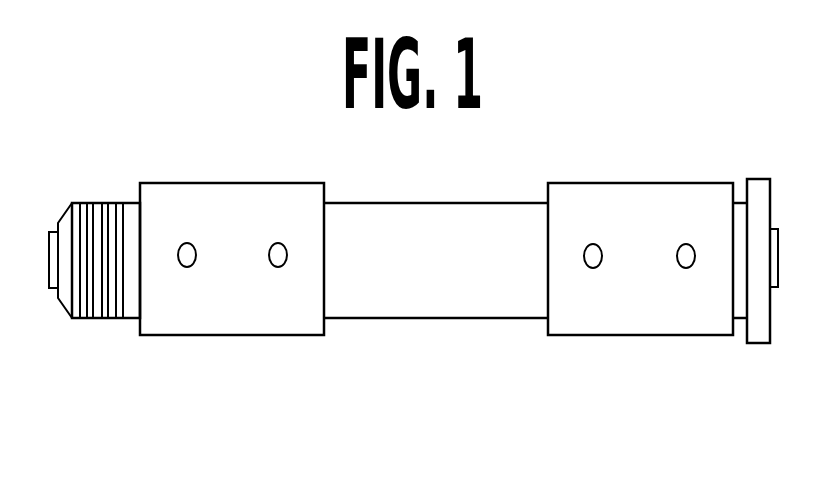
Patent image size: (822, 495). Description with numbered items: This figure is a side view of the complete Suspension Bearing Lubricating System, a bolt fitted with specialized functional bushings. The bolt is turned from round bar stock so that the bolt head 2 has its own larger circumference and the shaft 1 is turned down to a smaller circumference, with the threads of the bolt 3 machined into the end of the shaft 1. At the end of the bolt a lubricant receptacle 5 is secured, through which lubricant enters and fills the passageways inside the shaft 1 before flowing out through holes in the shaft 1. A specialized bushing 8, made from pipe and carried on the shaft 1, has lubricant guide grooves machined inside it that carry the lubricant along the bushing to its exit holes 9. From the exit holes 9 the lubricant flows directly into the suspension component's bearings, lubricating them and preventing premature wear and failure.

The shaft 1 is at (425, 270).
The bolt head 2 is at (763, 270).
The threads of the bolt 3 is at (108, 273).
The lubricant receptacle 5 is at (51, 268).
The specialized bushing 8 is at (593, 310).
The exit holes 9 is at (686, 268).